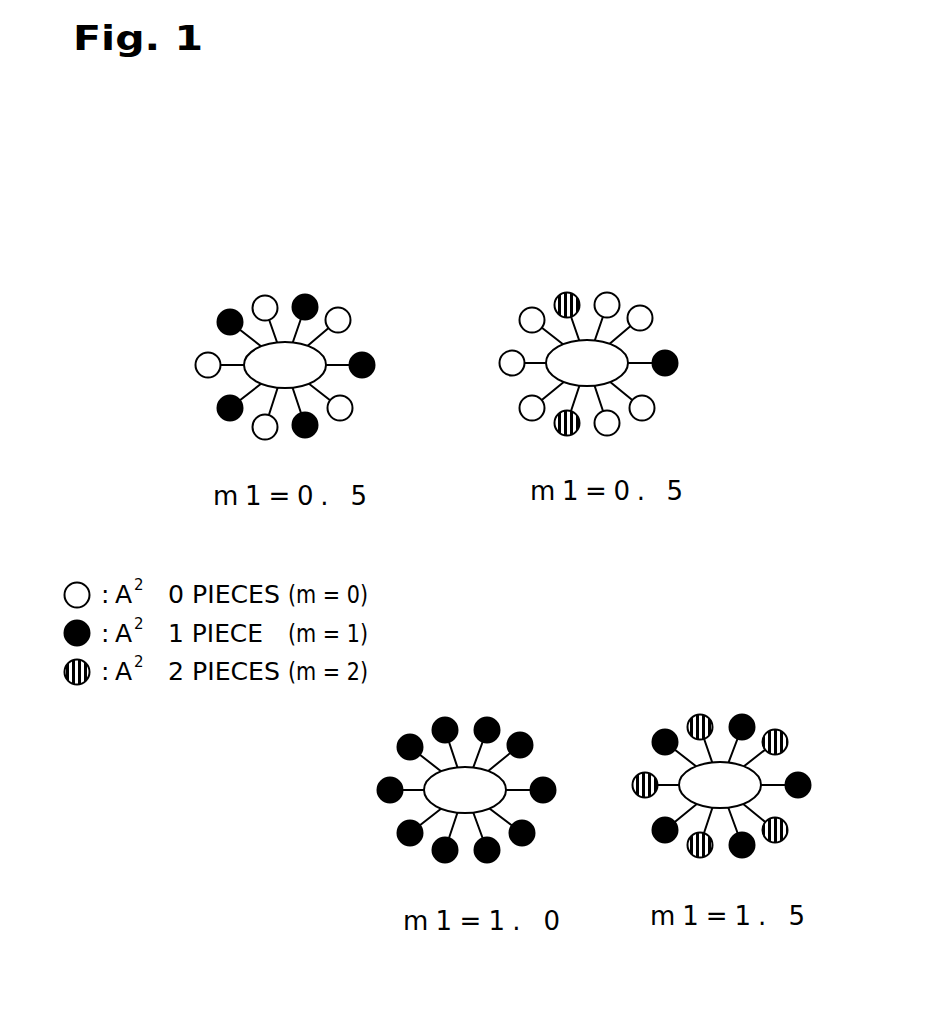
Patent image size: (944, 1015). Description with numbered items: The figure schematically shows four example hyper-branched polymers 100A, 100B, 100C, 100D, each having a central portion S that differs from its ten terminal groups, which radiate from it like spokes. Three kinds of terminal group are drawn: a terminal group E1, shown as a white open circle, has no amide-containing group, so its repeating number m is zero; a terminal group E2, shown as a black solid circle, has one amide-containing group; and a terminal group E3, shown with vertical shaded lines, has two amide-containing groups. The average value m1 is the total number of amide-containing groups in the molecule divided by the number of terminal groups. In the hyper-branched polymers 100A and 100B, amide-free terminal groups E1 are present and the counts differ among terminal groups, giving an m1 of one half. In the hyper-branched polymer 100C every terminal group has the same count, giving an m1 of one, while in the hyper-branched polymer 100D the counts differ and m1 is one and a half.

The hyper-branched polymer 100A is at (341, 272).
The hyper-branched polymer 100B is at (636, 271).
The hyper-branched polymer 100C is at (474, 696).
The hyper-branched polymer 100D is at (742, 692).
The terminal group E1 is at (207, 353).
The terminal group E2 is at (302, 295).
The terminal group E3 is at (562, 293).